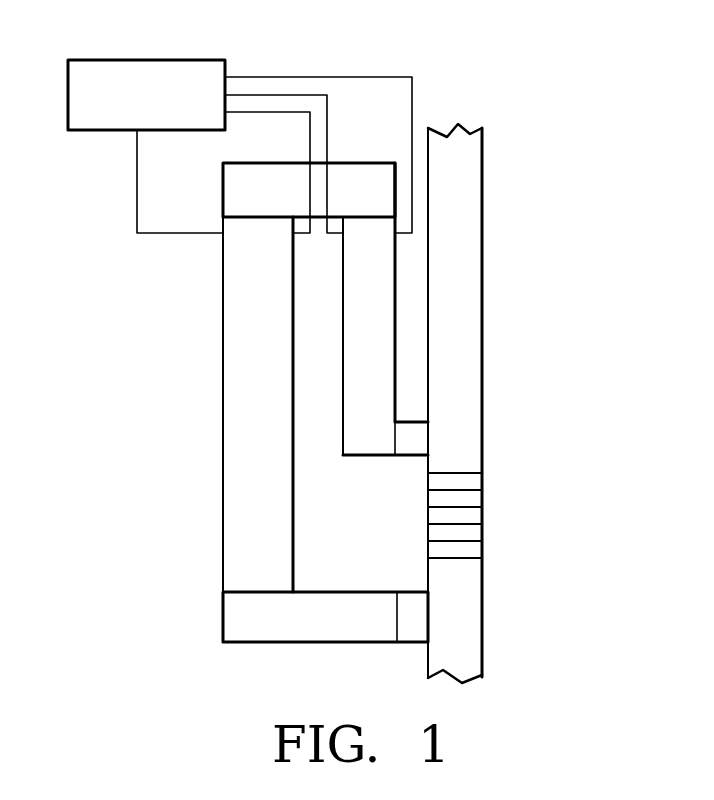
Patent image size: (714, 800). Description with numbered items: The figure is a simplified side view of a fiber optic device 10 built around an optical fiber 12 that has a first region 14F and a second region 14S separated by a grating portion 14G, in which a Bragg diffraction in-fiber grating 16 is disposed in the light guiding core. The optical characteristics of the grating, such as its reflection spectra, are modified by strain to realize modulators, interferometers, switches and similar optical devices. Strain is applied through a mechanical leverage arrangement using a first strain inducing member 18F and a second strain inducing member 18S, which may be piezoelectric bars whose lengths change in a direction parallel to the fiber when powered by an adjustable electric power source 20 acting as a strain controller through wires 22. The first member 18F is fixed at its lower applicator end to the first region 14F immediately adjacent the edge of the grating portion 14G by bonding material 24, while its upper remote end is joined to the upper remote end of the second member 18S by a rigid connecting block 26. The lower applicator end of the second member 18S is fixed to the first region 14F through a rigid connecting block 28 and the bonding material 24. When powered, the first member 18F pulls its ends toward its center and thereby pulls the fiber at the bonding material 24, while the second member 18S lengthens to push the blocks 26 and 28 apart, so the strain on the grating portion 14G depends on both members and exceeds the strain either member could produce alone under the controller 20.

The fiber optic device 10 is at (475, 51).
The fiber 12 is at (457, 235).
The first region 14F is at (447, 356).
The grating portion 14G is at (483, 479).
The second region 14S is at (483, 600).
The Bragg diffraction in-fiber grating 16 is at (467, 517).
The first strain inducing member 18F is at (377, 292).
The second strain inducing member 18S is at (247, 410).
The adjustable electric power source 20 is at (113, 58).
The wires 22 is at (137, 160).
The bonding material 24 is at (408, 602).
The connecting block 26 is at (368, 185).
The connecting block 28 is at (263, 625).